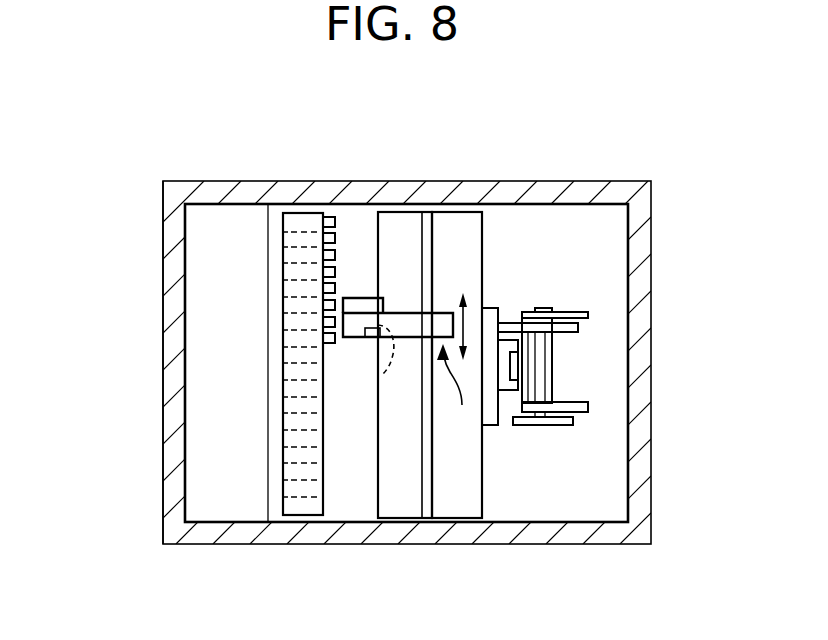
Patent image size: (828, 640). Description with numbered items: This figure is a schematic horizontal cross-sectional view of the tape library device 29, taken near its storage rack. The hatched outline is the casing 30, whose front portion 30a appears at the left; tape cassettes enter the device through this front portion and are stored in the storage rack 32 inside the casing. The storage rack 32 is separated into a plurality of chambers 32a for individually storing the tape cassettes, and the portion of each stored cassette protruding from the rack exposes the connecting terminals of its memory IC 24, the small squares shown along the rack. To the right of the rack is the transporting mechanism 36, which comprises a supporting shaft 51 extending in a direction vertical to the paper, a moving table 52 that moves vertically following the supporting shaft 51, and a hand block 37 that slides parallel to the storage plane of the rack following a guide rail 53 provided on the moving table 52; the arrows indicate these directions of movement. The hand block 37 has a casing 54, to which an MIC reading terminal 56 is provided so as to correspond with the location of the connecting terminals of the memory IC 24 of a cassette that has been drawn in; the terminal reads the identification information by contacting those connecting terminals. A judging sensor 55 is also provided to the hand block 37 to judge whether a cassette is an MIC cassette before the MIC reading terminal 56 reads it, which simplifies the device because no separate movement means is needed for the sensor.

The tape library device 29 is at (578, 138).
The casing 30 is at (651, 240).
The front portion 30a is at (166, 235).
The storage rack 32 is at (294, 212).
The chamber 32a is at (283, 234).
The memory IC 24 is at (335, 272).
The guide rail 53 is at (423, 483).
The moving table 52 is at (468, 505).
The casing of the hand block 54 is at (445, 318).
The judging sensor 55 is at (385, 310).
The MIC reading terminal 56 is at (401, 362).
The hand block 37 is at (458, 391).
The transporting mechanism 36 is at (560, 289).
The supporting shaft 51 is at (552, 426).